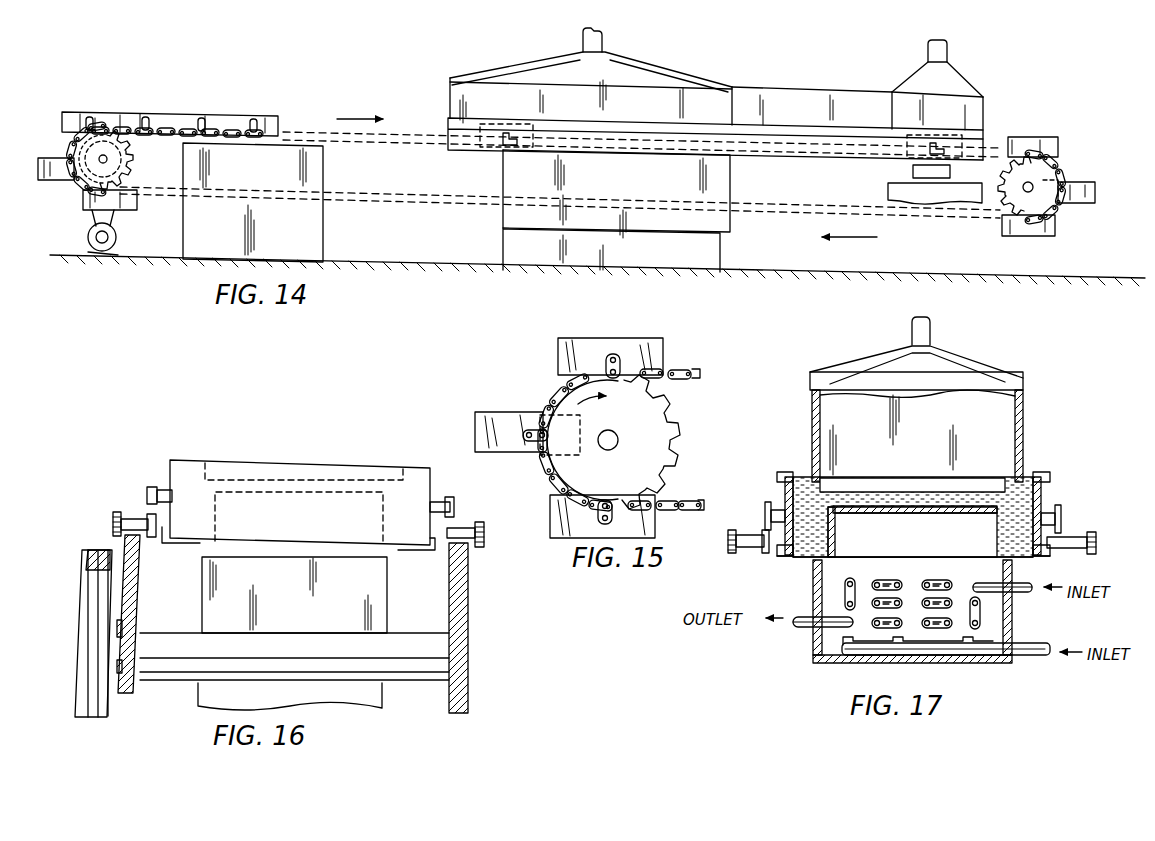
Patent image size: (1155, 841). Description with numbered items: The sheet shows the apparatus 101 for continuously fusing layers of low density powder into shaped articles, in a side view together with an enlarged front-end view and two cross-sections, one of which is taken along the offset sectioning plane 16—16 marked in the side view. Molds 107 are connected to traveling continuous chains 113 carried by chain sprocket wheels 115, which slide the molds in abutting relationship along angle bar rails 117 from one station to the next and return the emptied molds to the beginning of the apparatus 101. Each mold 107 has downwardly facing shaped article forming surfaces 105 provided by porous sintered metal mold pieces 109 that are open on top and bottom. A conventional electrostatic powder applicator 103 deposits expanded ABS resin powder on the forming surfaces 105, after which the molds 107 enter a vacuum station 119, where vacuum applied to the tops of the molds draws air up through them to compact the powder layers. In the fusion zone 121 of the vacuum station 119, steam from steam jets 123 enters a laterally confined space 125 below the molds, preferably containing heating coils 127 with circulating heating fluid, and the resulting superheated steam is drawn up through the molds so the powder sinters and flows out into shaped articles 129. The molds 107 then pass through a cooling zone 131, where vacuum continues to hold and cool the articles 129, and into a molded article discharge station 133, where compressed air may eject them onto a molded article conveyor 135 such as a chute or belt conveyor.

In FIG. 14, the apparatus 101 is at (410, 264).
In FIG. 14, the electrostatic powder applicator 103 is at (307, 232).
In FIG. 16, the electrostatic powder applicator 103 is at (332, 626).
In FIG. 17, the shaped article forming surfaces 105 is at (866, 510).
In FIG. 14, the molds 107 is at (238, 118).
In FIG. 15, the molds 107 is at (648, 342).
In FIG. 16, the molds 107 is at (181, 472).
In FIG. 17, the molds 107 is at (1047, 506).
In FIG. 16, the sintered metal mold pieces 109 is at (400, 483).
In FIG. 17, the sintered metal mold pieces 109 is at (1025, 488).
In FIG. 14, the continuous chains 113 is at (383, 137).
In FIG. 15, the continuous chains 113 is at (688, 380).
In FIG. 16, the continuous chains 113 is at (470, 521).
In FIG. 17, the continuous chains 113 is at (1077, 540).
In FIG. 14, the chain sprocket wheels 115 is at (136, 154).
In FIG. 15, the chain sprocket wheels 115 is at (668, 426).
In FIG. 16, the chain sprocket wheels 115 is at (468, 587).
In FIG. 16, the angle bar rails 117 is at (425, 548).
In FIG. 17, the angle bar rails 117 is at (1040, 560).
In FIG. 14, the vacuum station 119 is at (480, 66).
In FIG. 17, the vacuum station 119 is at (976, 360).
In FIG. 14, the fusion zone 121 is at (712, 281).
In FIG. 17, the fusion zone 121 is at (815, 578).
In FIG. 17, the steam jets 123 is at (956, 645).
In FIG. 17, the laterally confined space 125 is at (827, 634).
In FIG. 17, the heating coils 127 is at (888, 630).
In FIG. 14, the shaped articles 129 is at (913, 172).
In FIG. 17, the shaped articles 129 is at (937, 513).
In FIG. 14, the cooling zone 131 is at (885, 286).
In FIG. 14, the molded article discharge station 133 is at (893, 291).
In FIG. 14, the molded article conveyor 135 is at (888, 193).
In FIG. 14, the offset sectioning plane 16 is at (103, 172).